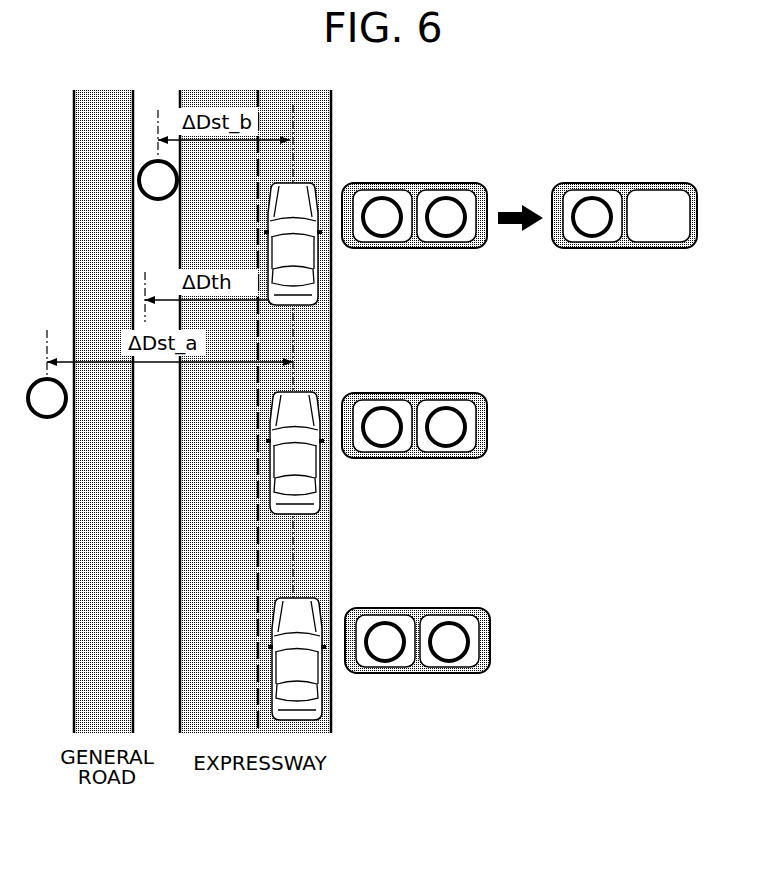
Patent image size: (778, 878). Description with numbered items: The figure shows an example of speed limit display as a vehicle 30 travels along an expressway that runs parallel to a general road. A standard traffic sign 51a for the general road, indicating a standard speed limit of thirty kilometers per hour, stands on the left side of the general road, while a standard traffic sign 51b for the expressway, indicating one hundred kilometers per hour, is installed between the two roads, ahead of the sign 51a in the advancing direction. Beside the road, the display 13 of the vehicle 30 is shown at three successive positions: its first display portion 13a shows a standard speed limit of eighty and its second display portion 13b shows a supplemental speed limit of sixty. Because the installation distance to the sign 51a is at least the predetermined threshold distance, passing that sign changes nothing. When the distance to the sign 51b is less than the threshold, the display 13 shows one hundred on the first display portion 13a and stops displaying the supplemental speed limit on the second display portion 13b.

The display 13 is at (519, 430).
The first display portion 13a is at (381, 184).
The second display portion 13b is at (447, 184).
The vehicle 30 is at (315, 705).
The standard traffic sign for a general road 51a is at (44, 419).
The standard traffic sign for an expressway 51b is at (160, 202).